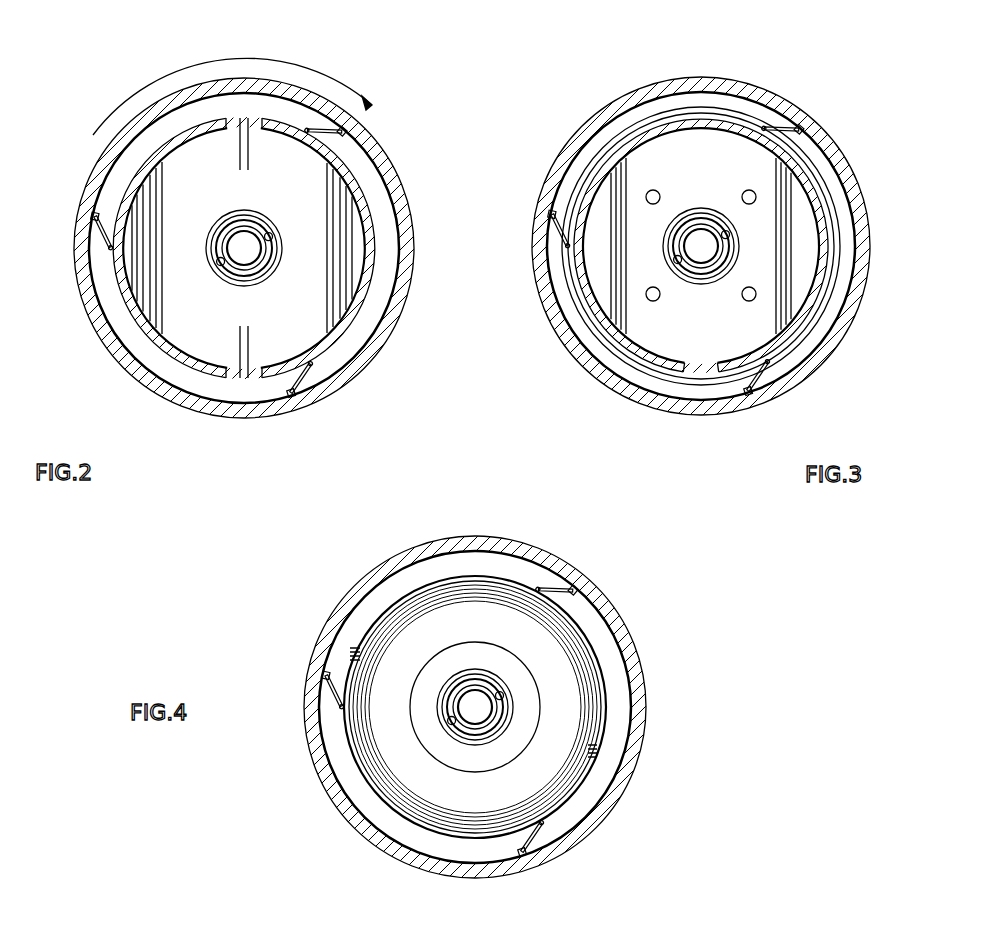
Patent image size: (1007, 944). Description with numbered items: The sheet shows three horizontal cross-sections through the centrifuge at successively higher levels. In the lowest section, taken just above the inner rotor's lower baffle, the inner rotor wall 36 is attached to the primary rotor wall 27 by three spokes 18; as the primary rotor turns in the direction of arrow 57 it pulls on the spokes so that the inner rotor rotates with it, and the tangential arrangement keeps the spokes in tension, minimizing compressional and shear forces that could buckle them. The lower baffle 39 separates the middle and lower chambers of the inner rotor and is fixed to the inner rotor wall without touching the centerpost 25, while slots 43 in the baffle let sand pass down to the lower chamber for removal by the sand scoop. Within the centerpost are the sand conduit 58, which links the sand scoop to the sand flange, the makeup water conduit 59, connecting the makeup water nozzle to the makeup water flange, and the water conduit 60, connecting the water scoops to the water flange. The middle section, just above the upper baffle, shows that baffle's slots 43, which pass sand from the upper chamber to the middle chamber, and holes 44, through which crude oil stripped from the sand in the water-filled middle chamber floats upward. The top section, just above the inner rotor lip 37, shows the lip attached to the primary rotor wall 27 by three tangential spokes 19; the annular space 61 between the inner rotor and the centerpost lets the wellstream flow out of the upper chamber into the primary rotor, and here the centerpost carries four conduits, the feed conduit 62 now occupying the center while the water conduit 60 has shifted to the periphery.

In FIG. 2, the spokes 18 is at (340, 128).
In FIG. 3, the spokes 18 is at (776, 125).
In FIG. 4, the tangential spokes 19 is at (572, 593).
In FIG. 2, the centerpost 25 is at (266, 213).
In FIG. 3, the centerpost 25 is at (730, 225).
In FIG. 4, the centerpost 25 is at (512, 722).
In FIG. 2, the primary rotor wall 27 is at (148, 402).
In FIG. 3, the primary rotor wall 27 is at (865, 246).
In FIG. 4, the primary rotor wall 27 is at (603, 818).
In FIG. 2, the inner rotor wall 36 is at (352, 326).
In FIG. 3, the inner rotor wall 36 is at (585, 300).
In FIG. 4, the inner rotor lip 37 is at (604, 744).
In FIG. 2, the lower baffle 39 is at (153, 273).
In FIG. 2, the slots 43 is at (214, 135).
In FIG. 3, the slots 43 is at (660, 130).
In FIG. 3, the holes 44 is at (650, 191).
In FIG. 2, the arrow 57 is at (265, 54).
In FIG. 2, the sand conduit 58 is at (221, 266).
In FIG. 3, the sand conduit 58 is at (680, 264).
In FIG. 4, the sand conduit 58 is at (449, 724).
In FIG. 2, the makeup water conduit 59 is at (273, 238).
In FIG. 3, the makeup water conduit 59 is at (729, 237).
In FIG. 4, the makeup water conduit 59 is at (503, 700).
In FIG. 2, the water conduit 60 is at (284, 263).
In FIG. 3, the water conduit 60 is at (726, 262).
In FIG. 4, the water conduit 60 is at (496, 694).
In FIG. 4, the annular space 61 is at (470, 652).
In FIG. 4, the feed conduit 62 is at (452, 682).